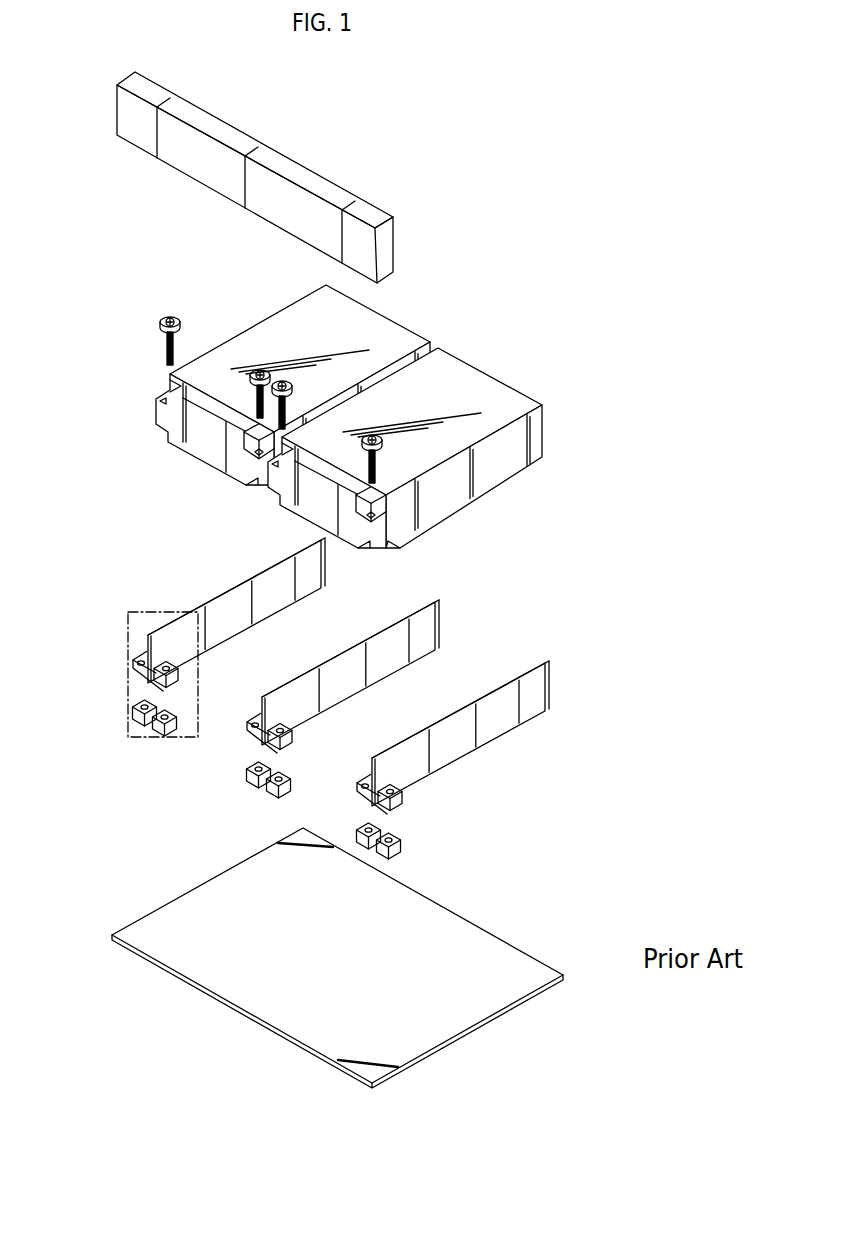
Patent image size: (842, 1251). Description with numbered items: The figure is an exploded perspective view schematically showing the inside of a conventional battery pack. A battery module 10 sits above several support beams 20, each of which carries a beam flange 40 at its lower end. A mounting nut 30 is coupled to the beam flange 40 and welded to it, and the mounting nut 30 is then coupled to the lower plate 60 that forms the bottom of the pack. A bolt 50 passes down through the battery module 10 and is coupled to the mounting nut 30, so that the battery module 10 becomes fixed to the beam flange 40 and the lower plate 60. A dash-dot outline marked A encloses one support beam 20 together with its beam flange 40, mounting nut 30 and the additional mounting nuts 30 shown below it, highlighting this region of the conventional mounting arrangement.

The battery module 10 is at (473, 380).
The support beam 20 is at (213, 612).
The mounting nut 30 is at (135, 712).
The beam flange 40 is at (182, 683).
The bolt 50 is at (161, 322).
The lower plate 60 is at (213, 897).
The detail region A is at (128, 667).